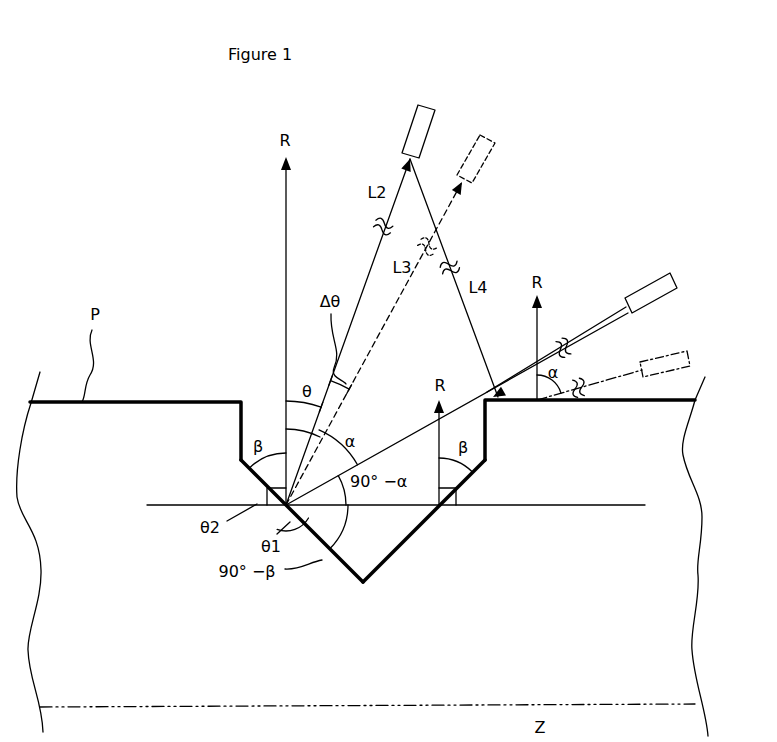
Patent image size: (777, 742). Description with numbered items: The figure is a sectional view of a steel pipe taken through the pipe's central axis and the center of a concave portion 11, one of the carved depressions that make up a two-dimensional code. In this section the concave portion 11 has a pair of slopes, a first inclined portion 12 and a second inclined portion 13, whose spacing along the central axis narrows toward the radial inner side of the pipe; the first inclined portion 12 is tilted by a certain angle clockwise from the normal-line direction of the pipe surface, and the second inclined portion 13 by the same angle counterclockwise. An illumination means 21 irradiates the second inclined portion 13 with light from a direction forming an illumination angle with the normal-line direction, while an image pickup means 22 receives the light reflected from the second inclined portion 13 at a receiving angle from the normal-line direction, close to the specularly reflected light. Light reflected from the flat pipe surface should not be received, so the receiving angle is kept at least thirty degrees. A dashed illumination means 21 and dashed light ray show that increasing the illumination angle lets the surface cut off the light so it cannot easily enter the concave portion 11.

The concave portion 11 is at (262, 400).
The first inclined portion 12 is at (377, 571).
The second inclined portion 13 is at (343, 580).
The illumination means 21 is at (640, 296).
The image pickup means 22 is at (425, 107).